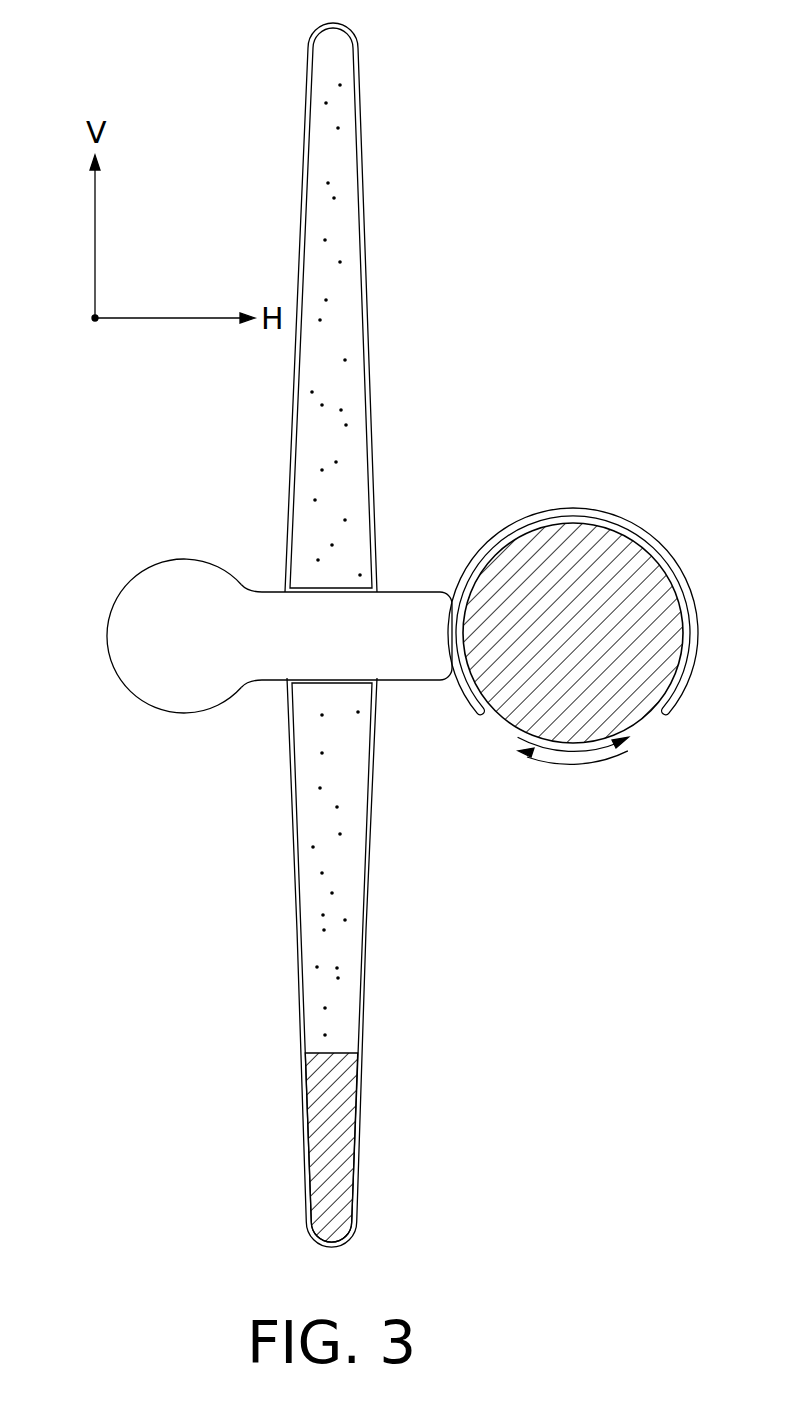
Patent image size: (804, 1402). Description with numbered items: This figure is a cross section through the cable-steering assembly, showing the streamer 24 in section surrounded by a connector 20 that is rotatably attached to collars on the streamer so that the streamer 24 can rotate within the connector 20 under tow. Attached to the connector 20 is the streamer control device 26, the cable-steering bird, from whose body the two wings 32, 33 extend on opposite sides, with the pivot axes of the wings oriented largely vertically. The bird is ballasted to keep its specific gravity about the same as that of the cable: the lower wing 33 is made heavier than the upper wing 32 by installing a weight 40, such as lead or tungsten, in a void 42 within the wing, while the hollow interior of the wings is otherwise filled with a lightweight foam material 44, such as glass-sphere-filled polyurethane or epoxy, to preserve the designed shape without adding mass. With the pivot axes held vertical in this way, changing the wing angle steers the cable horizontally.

The connector 20 is at (595, 517).
The streamer 24 is at (662, 598).
The streamer control device 26 is at (130, 655).
The wing 32 is at (360, 70).
The wing 33 is at (367, 953).
The weight 40 is at (358, 1145).
The void 42 is at (358, 440).
The foam material 44 is at (352, 338).